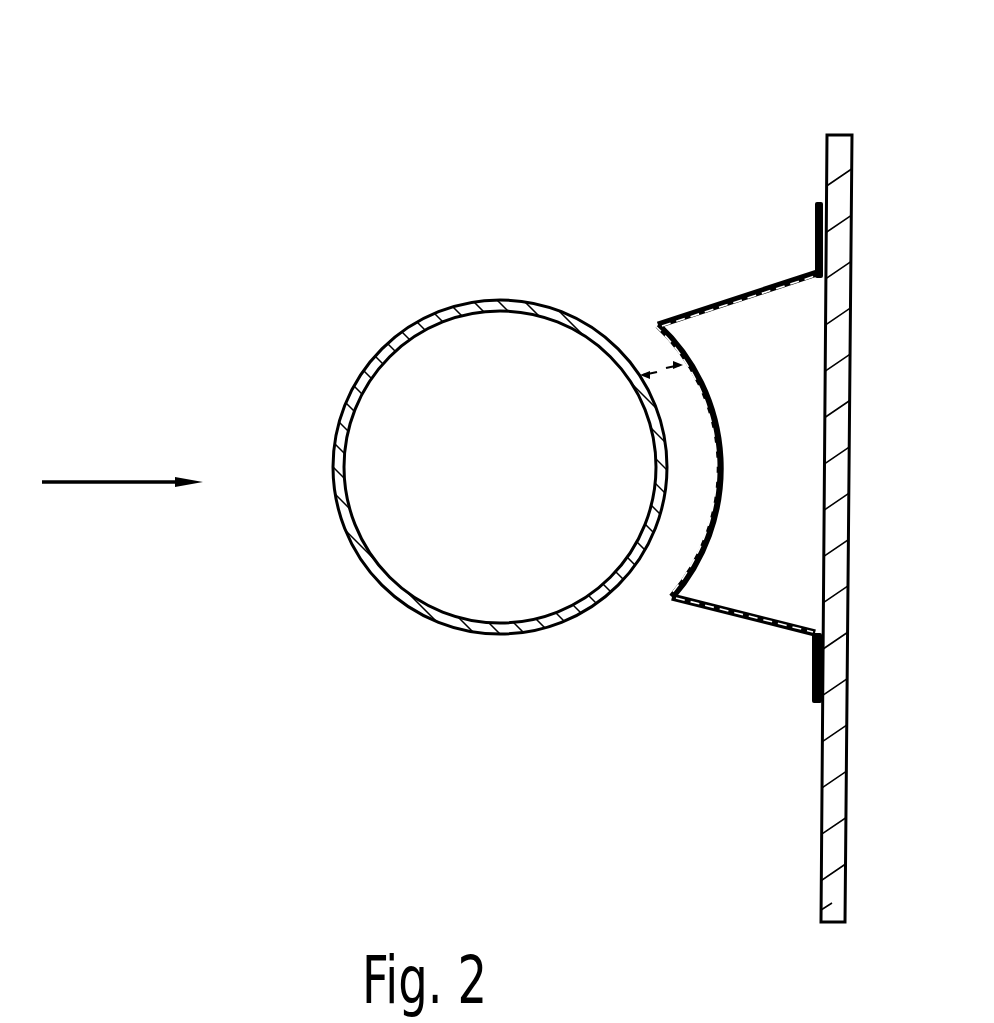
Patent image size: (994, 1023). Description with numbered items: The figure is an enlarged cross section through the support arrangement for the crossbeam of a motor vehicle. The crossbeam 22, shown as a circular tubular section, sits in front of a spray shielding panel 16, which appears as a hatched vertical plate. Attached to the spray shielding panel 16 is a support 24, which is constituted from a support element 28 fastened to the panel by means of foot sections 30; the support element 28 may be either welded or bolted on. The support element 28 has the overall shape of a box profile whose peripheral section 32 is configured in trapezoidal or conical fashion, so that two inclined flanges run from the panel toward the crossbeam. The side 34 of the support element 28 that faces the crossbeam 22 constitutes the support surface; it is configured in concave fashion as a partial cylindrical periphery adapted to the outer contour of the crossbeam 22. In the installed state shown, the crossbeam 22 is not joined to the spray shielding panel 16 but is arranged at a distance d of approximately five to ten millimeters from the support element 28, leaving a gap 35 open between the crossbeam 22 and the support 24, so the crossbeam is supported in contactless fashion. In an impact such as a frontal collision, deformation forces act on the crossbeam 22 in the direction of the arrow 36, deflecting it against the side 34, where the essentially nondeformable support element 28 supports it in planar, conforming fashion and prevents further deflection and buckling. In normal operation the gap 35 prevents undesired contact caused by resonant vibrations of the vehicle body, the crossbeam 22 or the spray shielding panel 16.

The spray shielding panel 16 is at (823, 838).
The crossbeam 22 is at (383, 585).
The support 24 is at (634, 458).
The support element 28 is at (697, 608).
The foot sections 30 is at (815, 218).
The peripheral section 32 is at (730, 296).
The side 34 is at (697, 552).
The gap 35 is at (688, 466).
The arrow 36 is at (93, 482).
The distance d is at (655, 362).